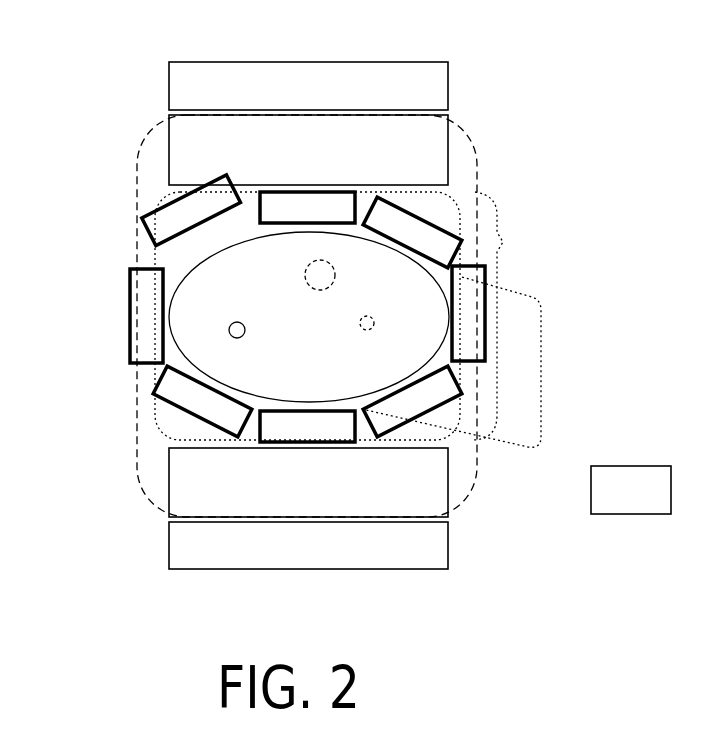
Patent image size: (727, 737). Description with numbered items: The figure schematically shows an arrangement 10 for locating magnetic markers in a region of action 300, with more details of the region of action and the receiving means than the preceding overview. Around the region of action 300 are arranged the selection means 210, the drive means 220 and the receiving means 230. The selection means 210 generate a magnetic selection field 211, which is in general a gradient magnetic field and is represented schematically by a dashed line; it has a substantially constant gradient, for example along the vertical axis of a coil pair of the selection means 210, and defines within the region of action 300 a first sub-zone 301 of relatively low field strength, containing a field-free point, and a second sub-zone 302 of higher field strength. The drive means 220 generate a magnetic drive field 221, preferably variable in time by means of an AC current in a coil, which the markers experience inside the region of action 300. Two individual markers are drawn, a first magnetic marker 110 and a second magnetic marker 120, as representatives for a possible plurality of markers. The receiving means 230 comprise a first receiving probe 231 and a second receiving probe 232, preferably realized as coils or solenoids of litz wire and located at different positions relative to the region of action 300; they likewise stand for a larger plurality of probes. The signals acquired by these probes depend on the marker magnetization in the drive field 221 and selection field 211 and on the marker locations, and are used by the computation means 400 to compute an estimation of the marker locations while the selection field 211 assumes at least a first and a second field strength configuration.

The arrangement 10 is at (48, 86).
The first magnetic marker 110 is at (239, 338).
The second magnetic marker 120 is at (369, 331).
The selection means 210 is at (332, 101).
The magnetic selection field 211 is at (462, 128).
The drive means 220 is at (332, 164).
The magnetic drive field 221 is at (460, 216).
The receiving means 230 is at (350, 308).
The first receiving probe 231 is at (128, 283).
The second receiving probe 232 is at (487, 313).
The region of action 300 is at (541, 372).
The first sub-zone 301 is at (336, 276).
The second sub-zone 302 is at (266, 284).
The computation means 400 is at (653, 501).